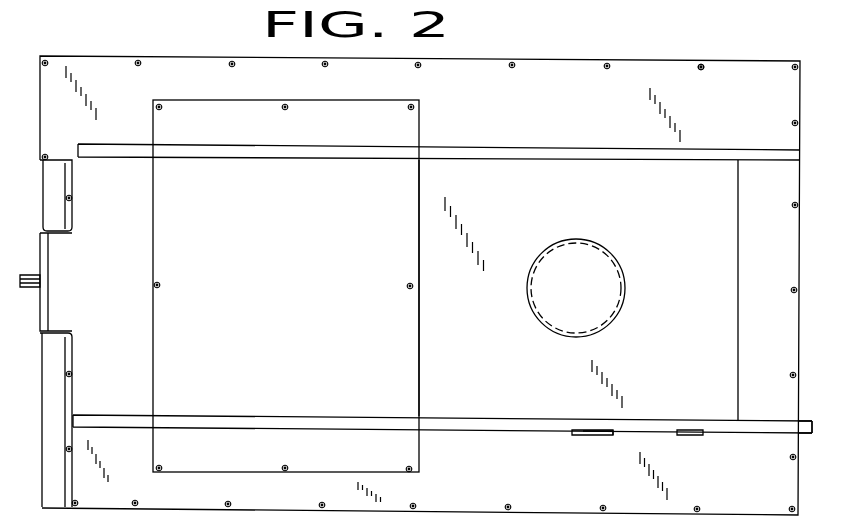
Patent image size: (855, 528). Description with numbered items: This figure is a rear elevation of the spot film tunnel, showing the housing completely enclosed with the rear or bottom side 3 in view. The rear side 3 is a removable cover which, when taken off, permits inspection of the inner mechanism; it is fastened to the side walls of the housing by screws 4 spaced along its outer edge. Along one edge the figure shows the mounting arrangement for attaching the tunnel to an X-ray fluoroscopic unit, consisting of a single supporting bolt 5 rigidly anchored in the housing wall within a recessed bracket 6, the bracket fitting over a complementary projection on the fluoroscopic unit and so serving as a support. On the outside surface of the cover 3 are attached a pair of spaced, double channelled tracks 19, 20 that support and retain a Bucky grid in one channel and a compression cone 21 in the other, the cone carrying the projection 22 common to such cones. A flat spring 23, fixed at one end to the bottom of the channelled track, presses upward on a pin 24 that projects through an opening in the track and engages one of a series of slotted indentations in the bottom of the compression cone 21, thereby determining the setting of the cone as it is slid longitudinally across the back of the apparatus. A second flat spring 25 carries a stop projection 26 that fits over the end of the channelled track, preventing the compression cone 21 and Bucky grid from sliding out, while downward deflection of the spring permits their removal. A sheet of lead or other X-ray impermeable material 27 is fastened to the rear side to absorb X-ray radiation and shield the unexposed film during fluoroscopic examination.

The rear side 3 is at (648, 76).
The screws 4 is at (793, 68).
The supporting bolt 5 is at (30, 277).
The recessed bracket 6 is at (58, 318).
The double channelled track 19 is at (572, 156).
The double channelled track 20 is at (503, 425).
The compression cone 21 is at (466, 174).
The projection 22 is at (603, 330).
The flat spring 23 is at (582, 437).
The pin 24 is at (567, 437).
The second flat spring 25 is at (723, 434).
The stop projection 26 is at (804, 428).
The sheet of lead 27 is at (409, 96).